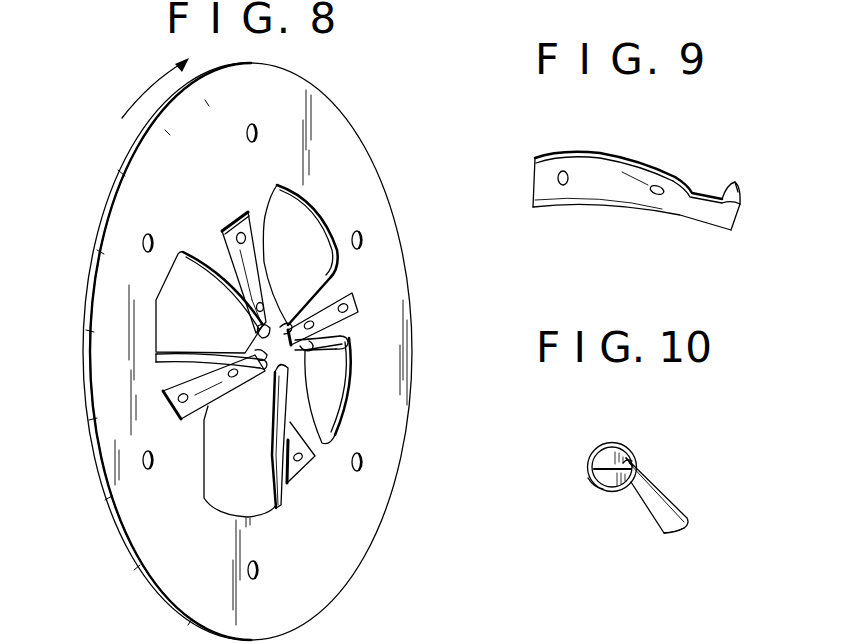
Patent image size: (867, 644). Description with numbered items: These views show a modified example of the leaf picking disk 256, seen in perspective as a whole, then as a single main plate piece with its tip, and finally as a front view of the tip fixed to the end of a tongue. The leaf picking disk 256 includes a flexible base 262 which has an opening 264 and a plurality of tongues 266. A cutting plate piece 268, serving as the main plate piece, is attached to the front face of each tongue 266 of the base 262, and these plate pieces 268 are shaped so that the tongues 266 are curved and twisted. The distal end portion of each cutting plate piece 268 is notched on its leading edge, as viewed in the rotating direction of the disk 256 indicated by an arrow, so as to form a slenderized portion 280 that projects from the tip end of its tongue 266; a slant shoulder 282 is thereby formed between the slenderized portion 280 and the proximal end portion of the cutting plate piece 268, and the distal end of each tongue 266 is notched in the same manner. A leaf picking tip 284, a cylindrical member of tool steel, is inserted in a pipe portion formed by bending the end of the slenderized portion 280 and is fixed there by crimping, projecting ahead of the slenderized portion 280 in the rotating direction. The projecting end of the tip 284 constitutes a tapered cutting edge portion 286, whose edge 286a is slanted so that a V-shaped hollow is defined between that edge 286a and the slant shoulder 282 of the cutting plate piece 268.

In FIG. 8, the leaf picking disk 256 is at (404, 168).
In FIG. 8, the flexible base 262 is at (340, 132).
In FIG. 8, the opening 264 is at (128, 547).
In FIG. 8, the tongue 266 is at (260, 223).
In FIG. 10, the tongue 266 is at (638, 500).
In FIG. 8, the cutting plate piece 268 is at (225, 240).
In FIG. 9, the cutting plate piece 268 is at (590, 165).
In FIG. 8, the slenderized portion 280 is at (250, 323).
In FIG. 9, the slenderized portion 280 is at (712, 215).
In FIG. 10, the slenderized portion 280 is at (617, 443).
In FIG. 8, the slant shoulder 282 is at (279, 326).
In FIG. 9, the slant shoulder 282 is at (691, 185).
In FIG. 10, the slant shoulder 282 is at (673, 520).
In FIG. 8, the leaf picking tip 284 is at (278, 333).
In FIG. 9, the leaf picking tip 284 is at (741, 207).
In FIG. 10, the leaf picking tip 284 is at (592, 462).
In FIG. 9, the tapered cutting edge portion 286 is at (739, 183).
In FIG. 10, the tapered cutting edge portion 286 is at (590, 487).
In FIG. 9, the edge 286a is at (729, 182).
In FIG. 10, the edge 286a is at (628, 462).